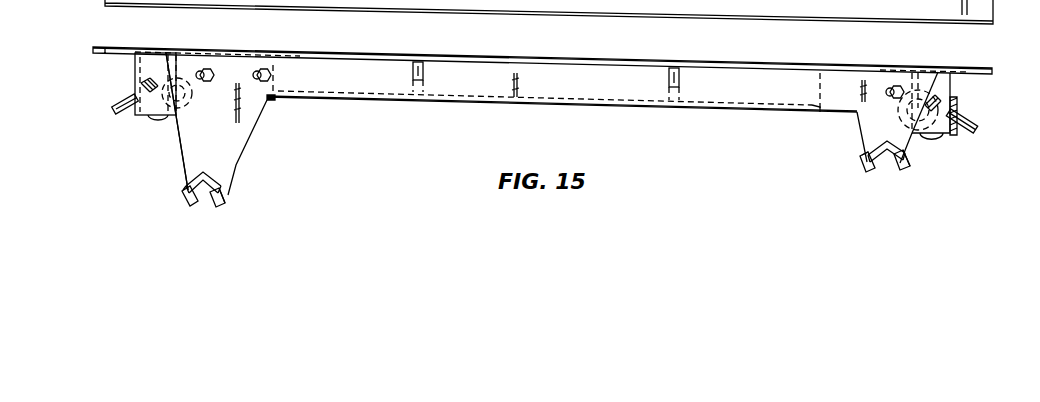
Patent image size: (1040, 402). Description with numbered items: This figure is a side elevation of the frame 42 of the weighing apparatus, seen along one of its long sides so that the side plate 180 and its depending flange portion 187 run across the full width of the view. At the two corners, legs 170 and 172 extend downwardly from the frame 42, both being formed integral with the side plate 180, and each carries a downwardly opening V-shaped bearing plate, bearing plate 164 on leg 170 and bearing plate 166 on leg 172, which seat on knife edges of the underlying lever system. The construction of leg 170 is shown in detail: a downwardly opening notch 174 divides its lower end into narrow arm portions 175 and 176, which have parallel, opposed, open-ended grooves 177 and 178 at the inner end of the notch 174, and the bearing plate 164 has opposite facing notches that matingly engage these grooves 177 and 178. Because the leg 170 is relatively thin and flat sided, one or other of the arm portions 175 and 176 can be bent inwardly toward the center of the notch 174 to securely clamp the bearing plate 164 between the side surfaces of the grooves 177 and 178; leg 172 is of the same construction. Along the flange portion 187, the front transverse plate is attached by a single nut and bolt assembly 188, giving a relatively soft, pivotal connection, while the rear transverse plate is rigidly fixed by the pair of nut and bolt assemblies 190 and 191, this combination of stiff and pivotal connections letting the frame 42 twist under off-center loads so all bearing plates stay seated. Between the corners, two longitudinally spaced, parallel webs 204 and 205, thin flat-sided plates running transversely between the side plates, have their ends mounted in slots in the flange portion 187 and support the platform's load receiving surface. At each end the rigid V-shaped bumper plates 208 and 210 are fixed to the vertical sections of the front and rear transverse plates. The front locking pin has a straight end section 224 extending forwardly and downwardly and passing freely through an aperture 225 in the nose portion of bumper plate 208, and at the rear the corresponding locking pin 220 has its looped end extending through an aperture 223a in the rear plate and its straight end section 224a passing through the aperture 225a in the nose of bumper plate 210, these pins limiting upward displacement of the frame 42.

The frame 42 is at (209, 11).
The bearing plate 164 is at (908, 158).
The bearing plate 166 is at (232, 180).
The leg 170 is at (857, 132).
The leg 172 is at (248, 120).
The notch 174 is at (202, 178).
The arm portion 175 is at (185, 200).
The arm portion 176 is at (224, 202).
The groove 177 is at (190, 187).
The groove 178 is at (232, 188).
The side plate 180 is at (258, 0).
The depending flange portion 187 is at (618, 93).
The nut and bolt assembly 188 is at (890, 85).
The nut and bolt assembly 190 is at (207, 82).
The nut and bolt assembly 191 is at (260, 73).
The web 204 is at (425, 70).
The web 205 is at (680, 78).
The bumper plate 208 is at (950, 140).
The bumper plate 210 is at (144, 120).
The locking pin 220 is at (112, 103).
The aperture 223a is at (165, 50).
The straight end section 224 is at (978, 129).
The straight end section 224a is at (122, 108).
The aperture 225 is at (955, 110).
The aperture 225a is at (132, 92).